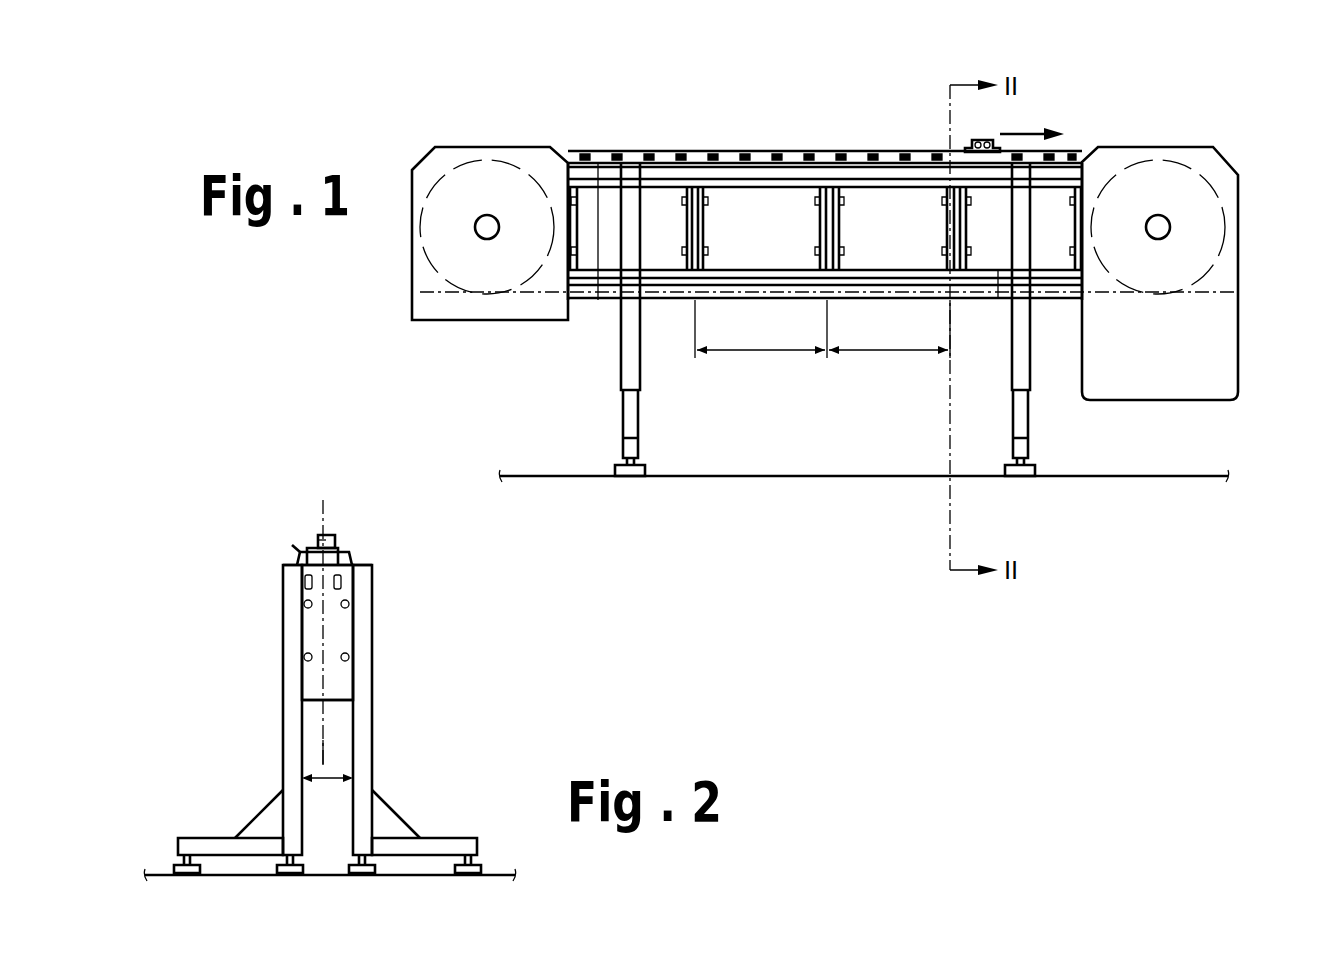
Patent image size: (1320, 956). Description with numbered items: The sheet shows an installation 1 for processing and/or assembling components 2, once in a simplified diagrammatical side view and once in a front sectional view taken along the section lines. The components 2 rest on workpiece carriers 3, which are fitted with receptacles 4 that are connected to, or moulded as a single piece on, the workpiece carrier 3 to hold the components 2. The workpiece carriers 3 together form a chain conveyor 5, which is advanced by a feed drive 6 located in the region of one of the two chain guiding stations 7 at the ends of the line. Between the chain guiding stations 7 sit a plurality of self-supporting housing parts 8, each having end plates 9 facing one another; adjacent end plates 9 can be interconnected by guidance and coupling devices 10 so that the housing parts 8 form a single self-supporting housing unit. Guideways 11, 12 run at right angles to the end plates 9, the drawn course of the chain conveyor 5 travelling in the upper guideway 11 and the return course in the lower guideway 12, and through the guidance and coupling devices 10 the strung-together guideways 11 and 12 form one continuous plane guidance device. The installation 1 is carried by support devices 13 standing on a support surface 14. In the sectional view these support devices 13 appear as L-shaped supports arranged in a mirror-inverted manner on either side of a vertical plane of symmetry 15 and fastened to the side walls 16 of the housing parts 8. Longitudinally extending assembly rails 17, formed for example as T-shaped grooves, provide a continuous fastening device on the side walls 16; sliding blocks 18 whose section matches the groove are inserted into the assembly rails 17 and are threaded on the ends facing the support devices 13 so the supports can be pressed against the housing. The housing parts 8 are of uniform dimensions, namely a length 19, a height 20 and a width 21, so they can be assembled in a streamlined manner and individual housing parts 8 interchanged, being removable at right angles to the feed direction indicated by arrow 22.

In FIG. 1, the installation 1 is at (358, 307).
In FIG. 1, the components 2 is at (985, 140).
In FIG. 2, the components 2 is at (330, 540).
In FIG. 1, the workpiece carriers 3 is at (922, 160).
In FIG. 2, the workpiece carriers 3 is at (372, 568).
In FIG. 2, the receptacles 4 is at (318, 545).
In FIG. 2, the chain conveyor 5 is at (288, 543).
In FIG. 1, the feed drive 6 is at (1160, 228).
In FIG. 1, the chain guiding station 7 is at (413, 145).
In FIG. 1, the housing parts 8 is at (657, 310).
In FIG. 2, the housing parts 8 is at (305, 630).
In FIG. 1, the end plates 9 is at (686, 203).
In FIG. 1, the guidance and coupling devices 10 is at (667, 200).
In FIG. 1, the guideway 11 is at (870, 150).
In FIG. 1, the guideway 12 is at (998, 300).
In FIG. 1, the support devices 13 is at (622, 400).
In FIG. 2, the support devices 13 is at (290, 732).
In FIG. 1, the support surface 14 is at (800, 476).
In FIG. 2, the support surface 14 is at (160, 870).
In FIG. 2, the vertical plane of symmetry 15 is at (325, 750).
In FIG. 2, the side walls 16 is at (298, 680).
In FIG. 2, the assembly rails 17 is at (345, 595).
In FIG. 2, the sliding blocks 18 is at (347, 583).
In FIG. 1, the length 19 is at (740, 352).
In FIG. 1, the height 20 is at (600, 250).
In FIG. 2, the width 21 is at (323, 775).
In FIG. 1, the arrow 22 is at (1025, 130).